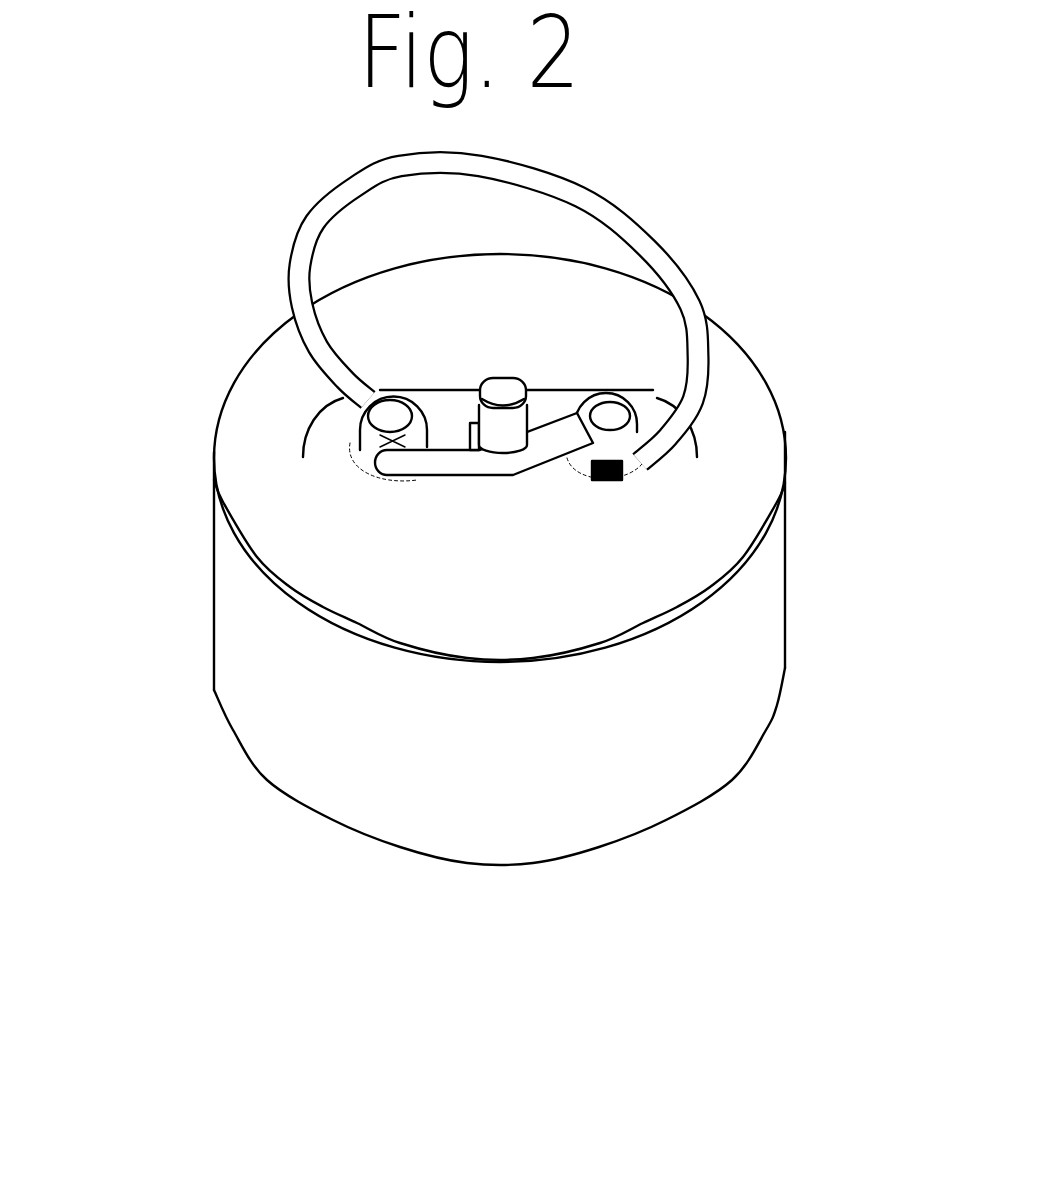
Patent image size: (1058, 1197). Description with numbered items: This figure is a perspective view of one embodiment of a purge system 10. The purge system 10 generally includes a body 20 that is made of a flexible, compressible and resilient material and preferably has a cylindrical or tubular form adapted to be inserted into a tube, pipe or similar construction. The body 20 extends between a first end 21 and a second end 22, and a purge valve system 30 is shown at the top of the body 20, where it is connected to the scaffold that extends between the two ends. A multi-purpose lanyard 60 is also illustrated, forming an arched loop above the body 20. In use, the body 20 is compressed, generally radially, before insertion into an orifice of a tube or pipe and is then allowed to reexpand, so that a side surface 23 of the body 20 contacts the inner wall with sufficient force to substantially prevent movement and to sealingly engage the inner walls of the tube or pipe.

The purge system 10 is at (503, 567).
The body 20 is at (503, 635).
The first end 21 is at (517, 842).
The second end 22 is at (742, 416).
The side surface 23 is at (226, 637).
The purge valve system 30 is at (503, 370).
The multi-purpose lanyard 60 is at (598, 181).